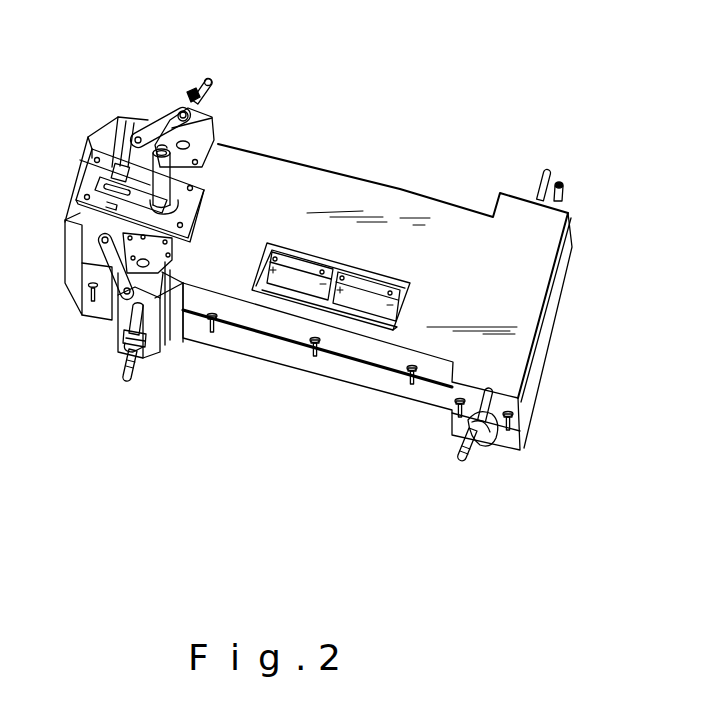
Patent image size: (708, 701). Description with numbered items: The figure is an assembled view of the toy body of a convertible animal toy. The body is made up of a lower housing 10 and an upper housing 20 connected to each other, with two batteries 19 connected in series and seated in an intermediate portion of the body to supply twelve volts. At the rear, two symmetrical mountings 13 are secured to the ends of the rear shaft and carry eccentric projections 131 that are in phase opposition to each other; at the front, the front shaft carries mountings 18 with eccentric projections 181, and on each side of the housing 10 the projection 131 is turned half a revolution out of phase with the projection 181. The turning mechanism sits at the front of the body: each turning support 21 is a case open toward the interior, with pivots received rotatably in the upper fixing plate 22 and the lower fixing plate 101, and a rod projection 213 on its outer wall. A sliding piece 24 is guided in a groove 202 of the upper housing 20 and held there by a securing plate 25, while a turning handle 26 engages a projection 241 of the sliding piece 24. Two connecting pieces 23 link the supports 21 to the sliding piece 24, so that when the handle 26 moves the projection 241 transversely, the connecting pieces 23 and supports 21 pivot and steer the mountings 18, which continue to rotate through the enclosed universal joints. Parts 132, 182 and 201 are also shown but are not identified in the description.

The lower housing 10 is at (365, 380).
The mounting 13 is at (488, 448).
The mounting 18 is at (155, 357).
The battery 19 is at (360, 295).
The upper housing 20 is at (345, 188).
The turning support 21 is at (212, 121).
The upper fixing plate 22 is at (197, 175).
The connecting piece 23 is at (152, 123).
The sliding piece 24 is at (100, 230).
The securing plate 25 is at (92, 168).
The turning handle 26 is at (165, 173).
The lower fixing plate 101 is at (182, 340).
The eccentric projection 131 is at (563, 197).
The cap 132 is at (563, 181).
The eccentric projection 181 is at (185, 104).
The shaft 182 is at (192, 93).
The pin 201 is at (533, 190).
The groove 202 is at (117, 110).
The rod projection 213 is at (212, 84).
The projection 241 is at (110, 182).